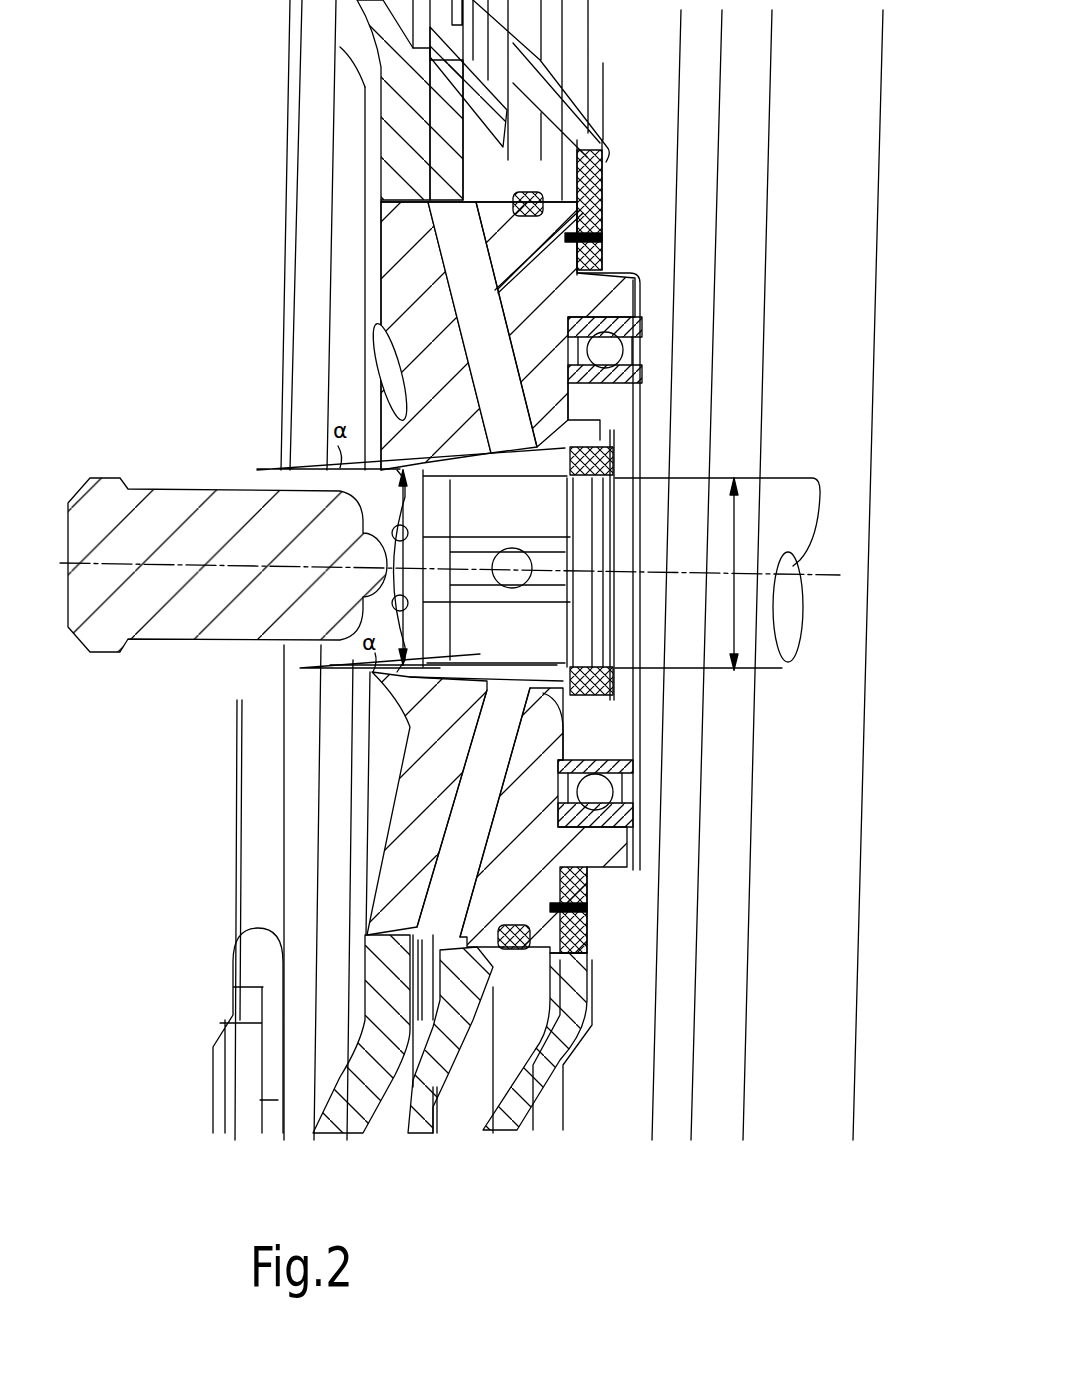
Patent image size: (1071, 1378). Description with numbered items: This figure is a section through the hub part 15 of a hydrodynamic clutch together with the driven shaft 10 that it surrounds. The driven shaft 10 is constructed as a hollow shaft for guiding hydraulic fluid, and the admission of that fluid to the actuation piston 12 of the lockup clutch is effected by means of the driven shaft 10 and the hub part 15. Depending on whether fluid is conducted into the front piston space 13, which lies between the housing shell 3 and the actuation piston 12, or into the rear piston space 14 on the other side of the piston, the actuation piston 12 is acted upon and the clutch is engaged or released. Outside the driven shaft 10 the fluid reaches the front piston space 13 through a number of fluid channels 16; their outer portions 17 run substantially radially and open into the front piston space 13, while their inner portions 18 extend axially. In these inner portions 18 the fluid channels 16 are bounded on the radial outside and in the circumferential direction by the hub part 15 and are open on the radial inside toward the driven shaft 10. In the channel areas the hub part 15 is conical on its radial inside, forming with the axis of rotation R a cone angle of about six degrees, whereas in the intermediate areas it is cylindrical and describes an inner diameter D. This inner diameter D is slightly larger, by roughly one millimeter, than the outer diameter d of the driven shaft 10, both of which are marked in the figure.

The housing shell 3 is at (352, 20).
The driven shaft 10 is at (780, 490).
The actuation piston 12 is at (453, 67).
The front piston space 13 is at (450, 128).
The rear piston space 14 is at (550, 143).
The hub part 15 is at (160, 503).
The fluid channels 16 is at (585, 210).
The outer portions 17 is at (475, 825).
The inner portions 18 is at (535, 675).
The inner diameter D is at (395, 537).
The outer diameter d is at (733, 537).
The axis of rotation R is at (178, 563).